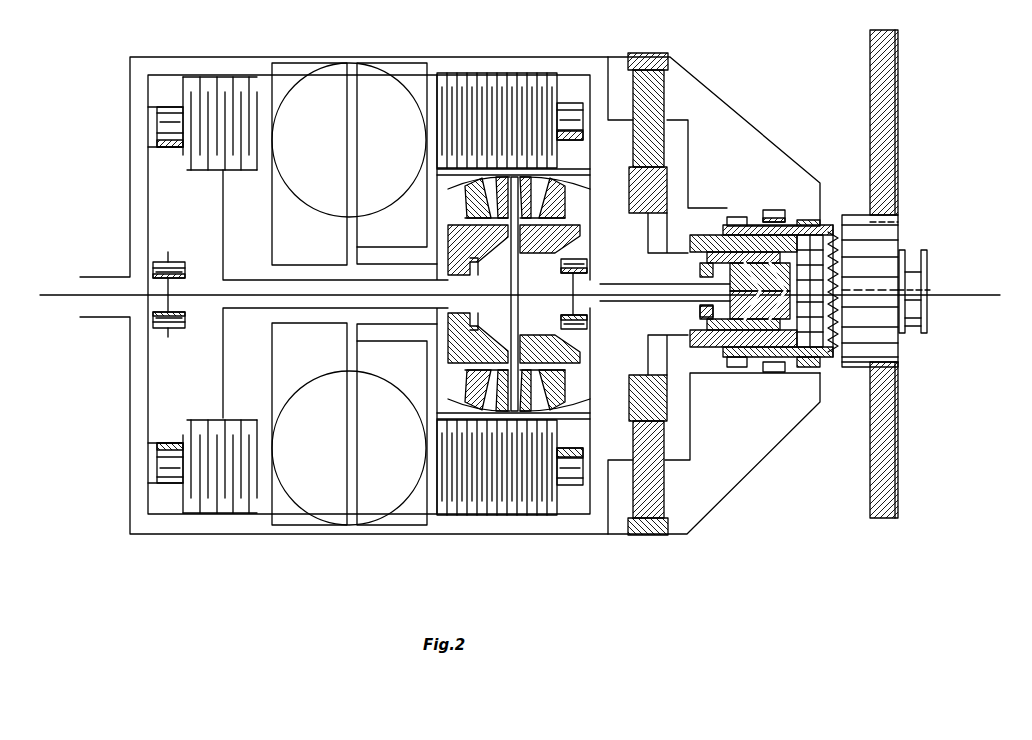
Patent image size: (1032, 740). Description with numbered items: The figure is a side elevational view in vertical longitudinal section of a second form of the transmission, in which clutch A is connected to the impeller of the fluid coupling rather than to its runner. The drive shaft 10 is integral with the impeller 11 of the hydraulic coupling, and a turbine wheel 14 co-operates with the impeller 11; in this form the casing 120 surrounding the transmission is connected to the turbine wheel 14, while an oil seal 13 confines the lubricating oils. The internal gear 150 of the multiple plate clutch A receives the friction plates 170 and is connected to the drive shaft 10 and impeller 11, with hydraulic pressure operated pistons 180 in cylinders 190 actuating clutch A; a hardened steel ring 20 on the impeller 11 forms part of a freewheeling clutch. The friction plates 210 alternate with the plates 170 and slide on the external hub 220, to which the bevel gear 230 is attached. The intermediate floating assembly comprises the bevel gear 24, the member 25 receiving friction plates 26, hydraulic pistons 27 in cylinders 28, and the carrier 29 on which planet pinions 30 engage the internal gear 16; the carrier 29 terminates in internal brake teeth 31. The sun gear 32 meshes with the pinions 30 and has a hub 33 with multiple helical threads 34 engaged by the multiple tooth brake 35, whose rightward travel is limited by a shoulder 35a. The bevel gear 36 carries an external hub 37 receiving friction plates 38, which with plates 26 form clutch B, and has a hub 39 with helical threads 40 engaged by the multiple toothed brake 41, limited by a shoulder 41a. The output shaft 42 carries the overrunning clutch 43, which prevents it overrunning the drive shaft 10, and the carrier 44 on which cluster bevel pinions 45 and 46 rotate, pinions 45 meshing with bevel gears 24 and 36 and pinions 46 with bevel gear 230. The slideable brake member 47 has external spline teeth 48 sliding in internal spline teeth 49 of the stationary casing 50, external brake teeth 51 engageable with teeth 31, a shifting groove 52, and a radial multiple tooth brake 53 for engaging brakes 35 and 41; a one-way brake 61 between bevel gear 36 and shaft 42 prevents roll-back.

The drive shaft 10 is at (63, 285).
The impeller 11 is at (325, 78).
The oil seal 13 is at (808, 220).
The turbine wheel 14 is at (365, 92).
The internal gear 16 is at (668, 64).
The hardened steel ring 20 is at (168, 235).
The bevel gear 24 is at (468, 203).
The member 25 is at (462, 73).
The friction plates 26 is at (478, 80).
The hydraulic pressure operated pistons 27 is at (568, 108).
The cylinders 28 is at (583, 130).
The carrier 29 is at (688, 149).
The planet pinions 30 is at (650, 115).
The internal brake teeth 31 is at (777, 210).
The sun gear 32 is at (648, 228).
The hub 33 is at (707, 258).
The multiple helical threads 34 is at (805, 367).
The multiple tooth brake 35 is at (690, 235).
The shoulder 35a is at (690, 245).
The bevel gear 36 is at (545, 194).
The external hub 37 is at (578, 173).
The friction plates 38 is at (446, 96).
The hub 39 is at (600, 290).
The multiple helical threads 40 is at (725, 233).
The multiple toothed brake 41 is at (700, 316).
The shoulder 41a is at (700, 312).
The output shaft 42 is at (203, 300).
The overrunning clutch 43 is at (185, 270).
The carrier 44 is at (518, 302).
The cluster bevel pinions 45 is at (542, 207).
The cluster bevel pinions 46 is at (532, 254).
The slideable brake member 47 is at (870, 260).
The external spline teeth 48 is at (878, 328).
The internal spline teeth 49 is at (880, 225).
The stationary transmission casing 50 is at (898, 80).
The external brake teeth 51 is at (740, 217).
The groove 52 is at (920, 275).
The radial multiple tooth brake 53 is at (832, 358).
The one-way brake 61 is at (580, 262).
The casing 120 is at (130, 213).
The internal gear 150 is at (226, 77).
The friction plates 170 is at (238, 80).
The hydraulic pressure operated pistons 180 is at (165, 107).
The cylinders 190 is at (157, 130).
The friction plates 210 is at (238, 170).
The external hub 220 is at (206, 170).
The bevel gear 230 is at (478, 275).
The multiple plate clutch A is at (196, 170).
The multiple plate clutch B is at (556, 158).